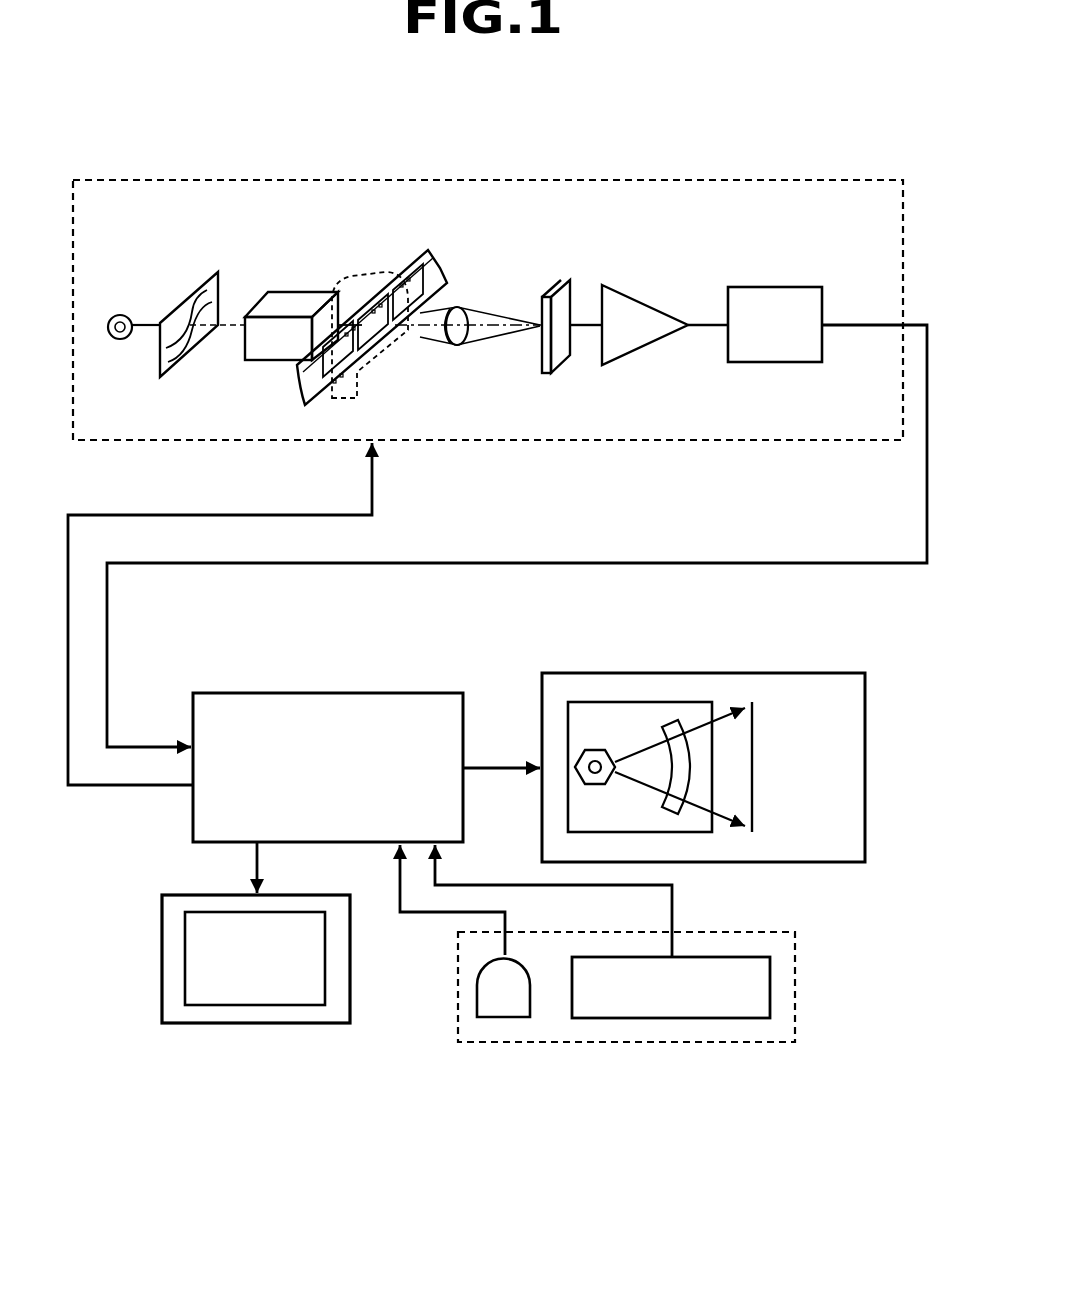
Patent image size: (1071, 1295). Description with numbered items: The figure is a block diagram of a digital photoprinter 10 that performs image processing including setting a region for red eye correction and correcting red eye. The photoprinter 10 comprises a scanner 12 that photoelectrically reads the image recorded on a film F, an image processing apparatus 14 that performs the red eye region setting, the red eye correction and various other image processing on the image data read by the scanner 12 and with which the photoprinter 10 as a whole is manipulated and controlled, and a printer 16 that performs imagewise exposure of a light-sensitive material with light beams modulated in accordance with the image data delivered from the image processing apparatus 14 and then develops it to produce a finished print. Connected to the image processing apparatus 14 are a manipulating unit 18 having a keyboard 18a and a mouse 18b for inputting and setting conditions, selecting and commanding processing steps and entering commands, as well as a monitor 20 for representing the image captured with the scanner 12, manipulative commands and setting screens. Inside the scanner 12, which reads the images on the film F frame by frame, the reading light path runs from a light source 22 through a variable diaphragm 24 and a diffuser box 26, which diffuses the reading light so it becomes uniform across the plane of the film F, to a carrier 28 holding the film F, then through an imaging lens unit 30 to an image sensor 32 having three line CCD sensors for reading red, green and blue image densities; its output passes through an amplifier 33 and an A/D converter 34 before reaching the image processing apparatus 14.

The digital photoprinter 10 is at (833, 96).
The scanner 12 is at (305, 180).
The image processing apparatus 14 is at (332, 693).
The printer 16 is at (702, 673).
The manipulating unit 18 is at (635, 1043).
The keyboard 18a is at (702, 1019).
The mouse 18b is at (498, 1018).
The monitor 20 is at (243, 1024).
The light source 22 is at (120, 315).
The variable diaphragm 24 is at (198, 290).
The diffuser box 26 is at (290, 310).
The carrier 28 is at (405, 358).
The imaging lens unit 30 is at (457, 307).
The image sensor 32 is at (563, 300).
The amplifier 33 is at (652, 348).
The A/D converter 34 is at (778, 363).
The film F is at (430, 268).